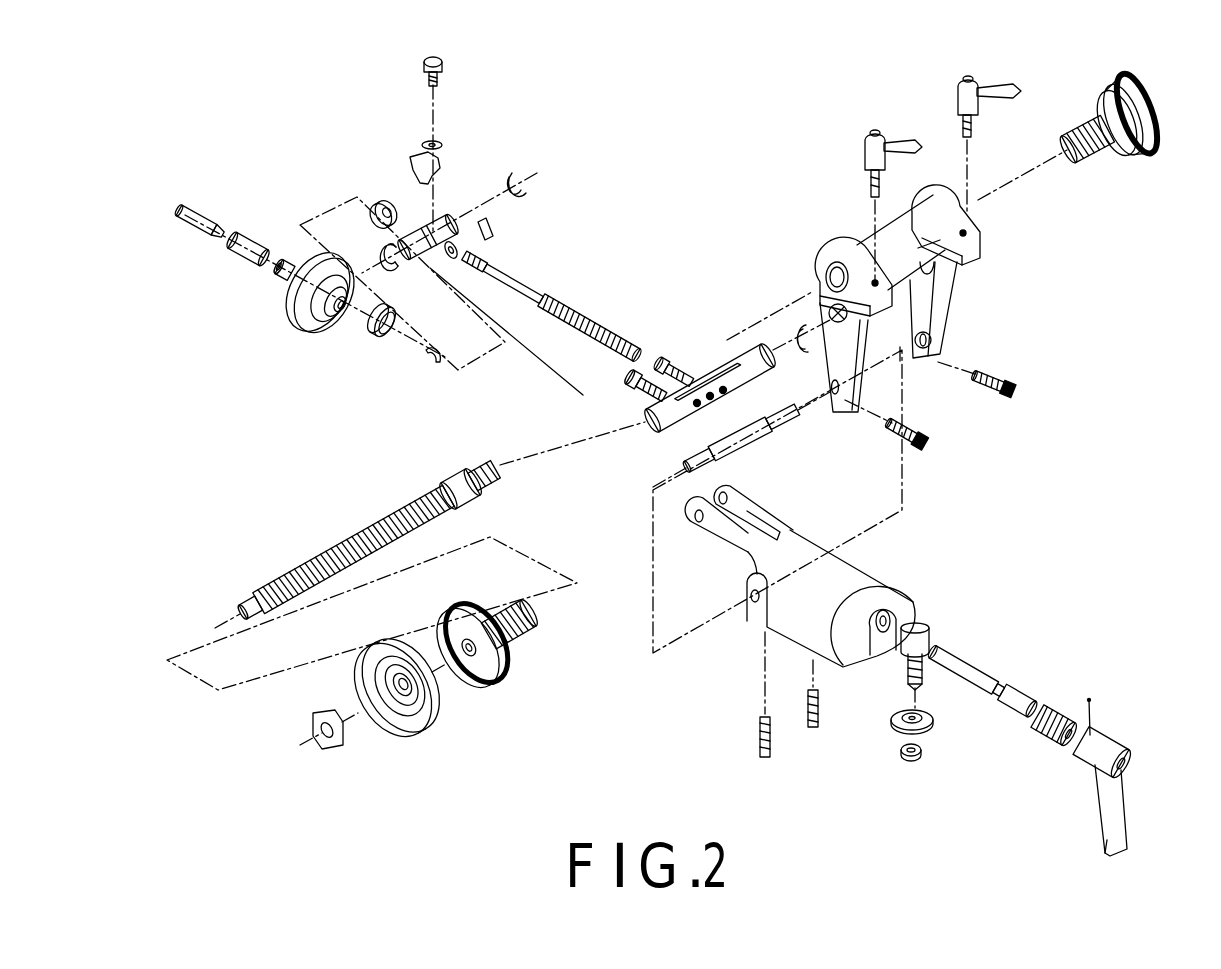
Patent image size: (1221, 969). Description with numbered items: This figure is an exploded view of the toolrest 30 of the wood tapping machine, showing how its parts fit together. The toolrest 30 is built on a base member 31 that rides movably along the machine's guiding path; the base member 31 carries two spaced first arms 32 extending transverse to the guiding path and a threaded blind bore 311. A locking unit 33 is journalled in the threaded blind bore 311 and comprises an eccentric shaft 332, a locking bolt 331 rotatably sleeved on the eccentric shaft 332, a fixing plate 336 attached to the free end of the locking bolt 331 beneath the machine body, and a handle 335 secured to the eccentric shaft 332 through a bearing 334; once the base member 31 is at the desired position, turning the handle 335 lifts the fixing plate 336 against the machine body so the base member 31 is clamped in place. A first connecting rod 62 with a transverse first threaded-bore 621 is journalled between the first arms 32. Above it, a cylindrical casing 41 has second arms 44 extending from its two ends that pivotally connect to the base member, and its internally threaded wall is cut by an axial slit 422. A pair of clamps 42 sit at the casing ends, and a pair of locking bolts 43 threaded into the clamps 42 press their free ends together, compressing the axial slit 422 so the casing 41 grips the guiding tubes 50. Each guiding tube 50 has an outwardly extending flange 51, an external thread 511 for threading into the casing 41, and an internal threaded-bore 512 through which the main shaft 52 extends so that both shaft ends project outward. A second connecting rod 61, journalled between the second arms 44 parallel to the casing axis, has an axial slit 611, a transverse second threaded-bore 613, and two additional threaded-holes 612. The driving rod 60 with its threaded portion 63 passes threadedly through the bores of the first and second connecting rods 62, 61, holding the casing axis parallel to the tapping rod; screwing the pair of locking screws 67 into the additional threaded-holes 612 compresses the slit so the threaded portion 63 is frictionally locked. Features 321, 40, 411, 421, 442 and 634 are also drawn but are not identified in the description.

The toolrest 30 is at (817, 615).
The base member 31 is at (859, 597).
The threaded blind bore 311 is at (900, 607).
The first arms 32 is at (737, 528).
The fork holes 321 is at (723, 511).
The locking unit 33 is at (1057, 732).
The locking bolt 331 is at (900, 655).
The eccentric shaft 332 is at (983, 670).
The bearing 334 is at (1070, 717).
The handle 335 is at (1117, 743).
The fixing plate 336 is at (893, 724).
The clamp assembly 40 is at (904, 233).
The cylindrical casing 41 is at (843, 231).
The tube bore 411 is at (862, 240).
The clamps 42 is at (943, 250).
The clamp block 421 is at (975, 225).
The axial slit 422 is at (960, 263).
The locking bolts 43 is at (993, 90).
The second arms 44 is at (846, 326).
The arm hole 442 is at (823, 300).
The guiding tubes 50 is at (517, 670).
The outwardly extending flange 51 is at (785, 427).
The external thread 511 is at (530, 635).
The internal threaded-bore 512 is at (470, 662).
The main shaft 52 is at (357, 537).
The driving rod 60 is at (567, 278).
The second connecting rod 61 is at (666, 359).
The axial slit 611 is at (713, 387).
The additional threaded-holes 612 is at (700, 408).
The second threaded-bore 613 is at (702, 380).
The first connecting rod 62 is at (443, 220).
The first threaded-bore 621 is at (440, 245).
The retaining ring and key 634 is at (470, 205).
The threaded portion 63 is at (557, 300).
The locking screws 67 is at (620, 383).